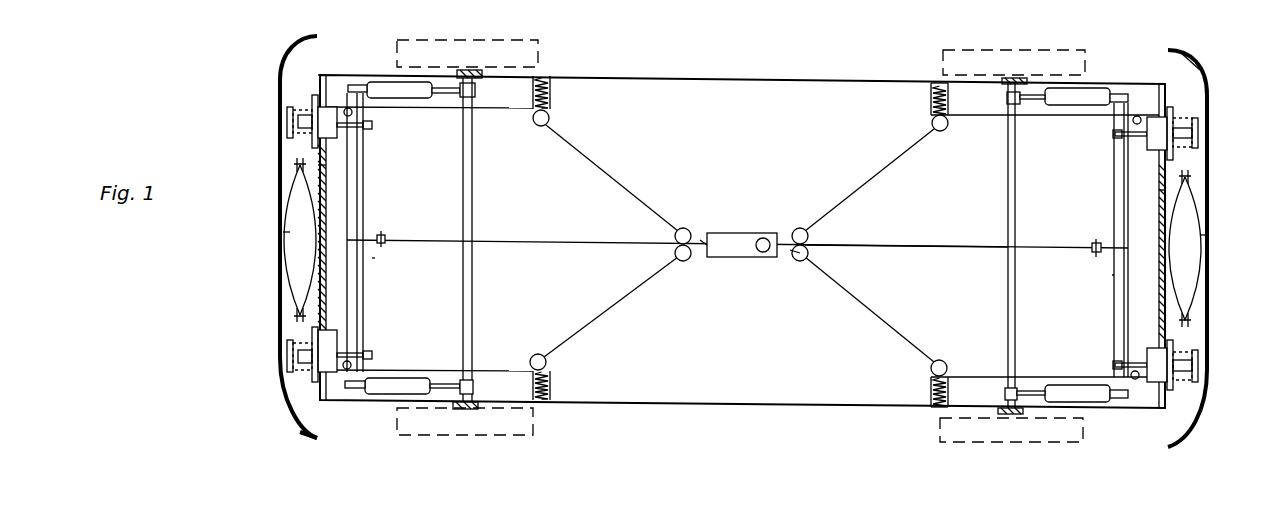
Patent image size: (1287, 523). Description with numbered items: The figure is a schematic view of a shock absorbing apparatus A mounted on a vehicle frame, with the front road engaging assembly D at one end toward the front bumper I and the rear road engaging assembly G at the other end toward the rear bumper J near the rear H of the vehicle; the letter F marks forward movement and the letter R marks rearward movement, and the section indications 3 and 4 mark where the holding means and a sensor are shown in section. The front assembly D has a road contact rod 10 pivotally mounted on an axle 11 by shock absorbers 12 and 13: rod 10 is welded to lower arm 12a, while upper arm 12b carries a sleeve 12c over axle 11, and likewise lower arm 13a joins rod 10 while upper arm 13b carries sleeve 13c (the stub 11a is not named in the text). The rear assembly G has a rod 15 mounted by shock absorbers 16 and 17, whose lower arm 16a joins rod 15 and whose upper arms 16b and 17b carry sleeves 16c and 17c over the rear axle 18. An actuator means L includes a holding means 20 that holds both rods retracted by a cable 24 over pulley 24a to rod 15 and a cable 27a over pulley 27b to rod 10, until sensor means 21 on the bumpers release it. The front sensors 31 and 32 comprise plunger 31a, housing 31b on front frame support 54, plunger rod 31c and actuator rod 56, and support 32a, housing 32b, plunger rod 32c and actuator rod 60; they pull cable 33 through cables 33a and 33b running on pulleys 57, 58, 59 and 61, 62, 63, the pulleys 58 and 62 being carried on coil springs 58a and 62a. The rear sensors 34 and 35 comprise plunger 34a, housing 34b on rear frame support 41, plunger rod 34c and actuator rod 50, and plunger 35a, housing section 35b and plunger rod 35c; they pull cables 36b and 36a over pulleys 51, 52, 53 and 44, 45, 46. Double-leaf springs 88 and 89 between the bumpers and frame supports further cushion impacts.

The road contact member or rod 10 is at (1126, 296).
The axle 11 is at (1012, 198).
The cylinder stub 11a is at (357, 85).
The shock absorber 12 is at (1098, 403).
The lower arm 12a is at (1123, 398).
The upper arm 12b is at (1032, 396).
The sleeve 12c is at (1004, 394).
The shock absorber 13 is at (1080, 93).
The lower arm 13a is at (1125, 93).
The upper arm 13b is at (1032, 103).
The sleeve 13c is at (1006, 98).
The road contact member or rod 15 is at (363, 205).
The shock absorber 16 is at (405, 384).
The lower arm 16a is at (357, 388).
The upper arm 16b is at (447, 375).
The sleeve 16c is at (475, 387).
The shock absorber 17 is at (381, 82).
The upper arm 17b is at (443, 87).
The sleeve 17c is at (476, 90).
The rear axle 18 is at (472, 197).
The holding means 20 is at (738, 222).
The sensor means 21 is at (296, 380).
The cable 24 is at (550, 240).
The pulley 24a is at (385, 237).
The cable 27a is at (920, 244).
The pulley 27b is at (1092, 246).
The front bumper sensor 31 is at (1200, 368).
The plunger 31a is at (1196, 358).
The sensor housing 31b is at (1147, 347).
The plunger rod 31c is at (1180, 347).
The front bumper sensor 32 is at (1196, 125).
The support 32a is at (1196, 155).
The sensor housing 32b is at (1150, 152).
The plunger rod 32c is at (1177, 115).
The cable 33 is at (790, 252).
The cable 33a is at (880, 328).
The cable 33b is at (865, 183).
The rear bumper sensor 34 is at (287, 118).
The plunger 34a is at (285, 100).
The sensor housing 34b is at (317, 74).
The plunger rod 34c is at (307, 108).
The rear bumper sensor 35 is at (278, 357).
The plunger 35a is at (283, 368).
The sensor housing section 35b is at (333, 343).
The plunger rod 35c is at (306, 368).
The cable 36a is at (590, 331).
The cable 36b is at (590, 140).
The rear frame support 41 is at (323, 165).
The pulley 44 is at (683, 262).
The pulley 45 is at (537, 353).
The pulley 46 is at (345, 382).
The actuator rod 50 is at (372, 125).
The pulley 51 is at (345, 105).
The pulley 52 is at (538, 129).
The pulley 53 is at (683, 228).
The front frame support 54 is at (1160, 190).
The actuator rod 56 is at (1115, 362).
The pulley 57 is at (1133, 382).
The pulley 58 is at (938, 360).
The coil spring 58a is at (930, 392).
The pulley 59 is at (801, 262).
The actuator rod 60 is at (1122, 131).
The pulley 61 is at (1137, 115).
The pulley 62 is at (940, 131).
The coil spring 62a is at (930, 116).
The pulley 63 is at (800, 228).
The double-leaf spring 88 is at (1190, 195).
The double-leaf spring 89 is at (283, 195).
The section line 3 is at (643, 222).
The section line 4 is at (228, 353).
The apparatus A is at (1220, 54).
The front road engaging assembly D is at (1112, 276).
The forward movement direction F is at (831, 457).
The rear road engaging assembly G is at (372, 258).
The rear of the vehicle H is at (328, 442).
The front bumper I is at (1207, 236).
The rear bumper J is at (283, 232).
The actuator means L is at (742, 268).
The rearward movement direction R is at (667, 455).